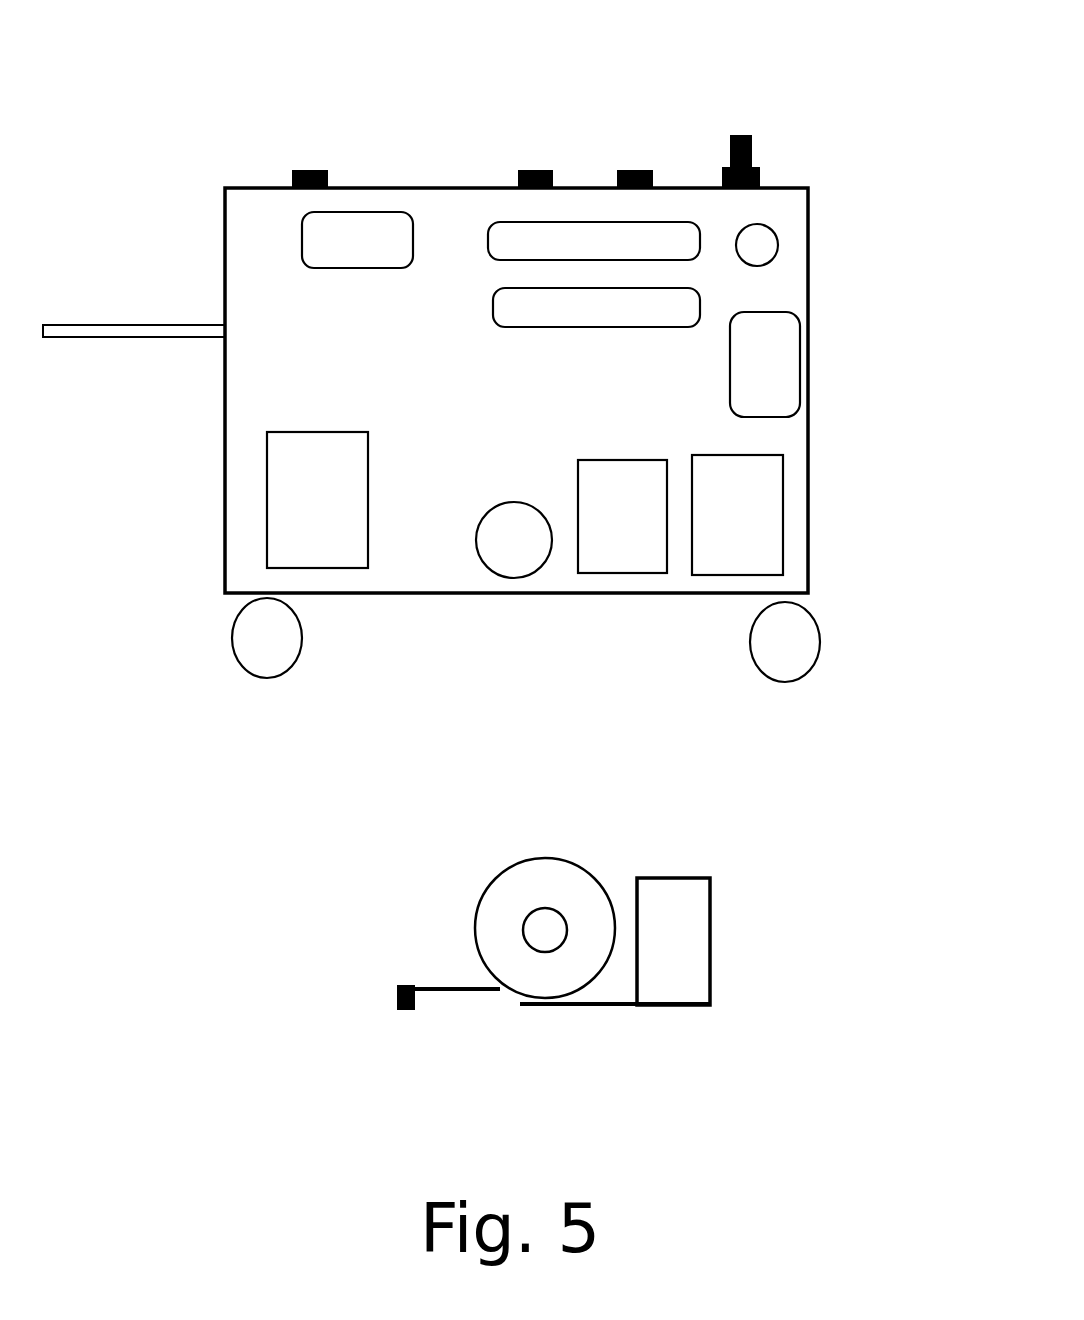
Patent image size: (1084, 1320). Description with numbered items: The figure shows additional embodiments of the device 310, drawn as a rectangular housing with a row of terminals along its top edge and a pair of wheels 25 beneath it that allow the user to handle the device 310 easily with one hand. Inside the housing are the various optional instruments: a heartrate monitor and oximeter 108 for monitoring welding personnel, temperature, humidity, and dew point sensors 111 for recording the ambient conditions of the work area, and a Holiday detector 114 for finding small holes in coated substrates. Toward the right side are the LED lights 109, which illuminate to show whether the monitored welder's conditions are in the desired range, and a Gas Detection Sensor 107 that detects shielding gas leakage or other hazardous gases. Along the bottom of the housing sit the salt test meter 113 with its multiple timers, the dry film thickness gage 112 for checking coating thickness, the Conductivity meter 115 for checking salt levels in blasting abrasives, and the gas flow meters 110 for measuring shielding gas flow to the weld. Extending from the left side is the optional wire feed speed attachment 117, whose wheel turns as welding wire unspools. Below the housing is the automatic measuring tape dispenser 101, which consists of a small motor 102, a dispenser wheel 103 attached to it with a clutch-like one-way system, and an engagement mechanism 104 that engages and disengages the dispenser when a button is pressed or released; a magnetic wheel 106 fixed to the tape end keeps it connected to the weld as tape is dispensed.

The device 310 is at (789, 168).
The heartrate monitor and oximeter 108 is at (372, 222).
The temperature, humidity, and dew point sensors 111 is at (574, 238).
The Holiday detector 114 is at (500, 308).
The LED lights 109 is at (768, 248).
The Gas Detection Sensor 107 is at (800, 345).
The wire feed speed attachment 117 is at (115, 326).
The salt test meter 113 is at (292, 490).
The dry film thickness gage 112 is at (515, 565).
The Conductivity meter 115 is at (615, 557).
The gas flow meters 110 is at (762, 517).
The wheels 25 is at (247, 650).
The automatic measuring tape dispenser 101 is at (413, 913).
The dispenser wheel 103 is at (497, 903).
The motor 102 is at (678, 948).
The engagement mechanism 104 is at (497, 994).
The magnetic wheel 106 is at (397, 1000).